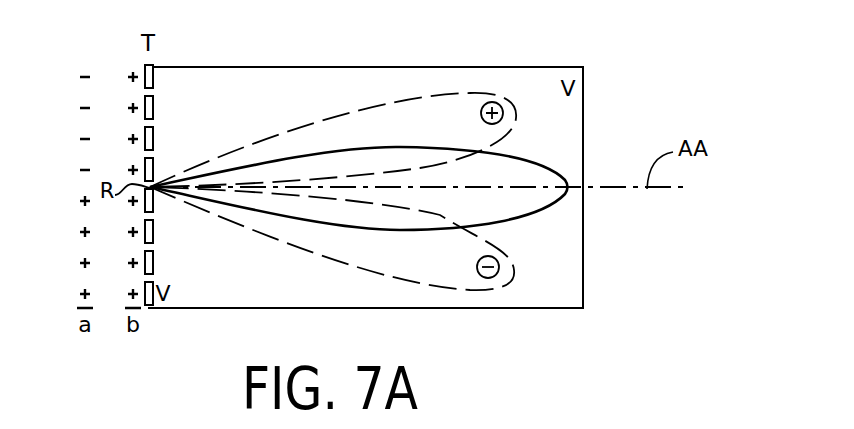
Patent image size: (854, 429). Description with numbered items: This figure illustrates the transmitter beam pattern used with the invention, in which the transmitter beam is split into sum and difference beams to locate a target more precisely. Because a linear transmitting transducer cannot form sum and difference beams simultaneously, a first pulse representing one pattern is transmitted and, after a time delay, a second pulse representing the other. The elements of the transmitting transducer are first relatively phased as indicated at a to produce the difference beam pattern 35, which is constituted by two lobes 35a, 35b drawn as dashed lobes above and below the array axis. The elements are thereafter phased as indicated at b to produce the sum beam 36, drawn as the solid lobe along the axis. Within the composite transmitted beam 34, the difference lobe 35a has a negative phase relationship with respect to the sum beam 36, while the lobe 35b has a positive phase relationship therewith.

The composite transmitted beam 34 is at (540, 138).
The difference beam pattern 35 is at (337, 185).
The difference lobe 35a is at (490, 290).
The difference lobe 35b is at (490, 95).
The sum beam 36 is at (567, 177).